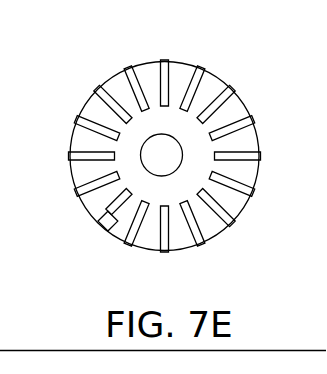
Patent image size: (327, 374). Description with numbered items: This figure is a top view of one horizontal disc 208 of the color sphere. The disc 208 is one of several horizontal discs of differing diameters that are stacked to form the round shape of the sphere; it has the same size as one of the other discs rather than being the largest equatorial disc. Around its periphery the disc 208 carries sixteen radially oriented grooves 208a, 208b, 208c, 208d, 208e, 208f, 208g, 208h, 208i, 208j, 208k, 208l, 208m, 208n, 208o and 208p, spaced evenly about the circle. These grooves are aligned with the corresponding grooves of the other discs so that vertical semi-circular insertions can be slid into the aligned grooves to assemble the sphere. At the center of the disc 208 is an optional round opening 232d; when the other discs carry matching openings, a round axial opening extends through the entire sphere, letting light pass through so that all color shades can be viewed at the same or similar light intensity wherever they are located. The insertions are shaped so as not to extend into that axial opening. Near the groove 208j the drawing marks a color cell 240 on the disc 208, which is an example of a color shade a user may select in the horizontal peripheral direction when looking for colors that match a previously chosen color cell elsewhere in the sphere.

The horizontal disc 208 is at (182, 40).
The groove 208a is at (200, 64).
The groove 208b is at (234, 88).
The groove 208c is at (253, 117).
The groove 208d is at (259, 156).
The groove 208e is at (253, 190).
The groove 208f is at (233, 224).
The groove 208g is at (202, 246).
The groove 208h is at (164, 253).
The groove 208i is at (125, 246).
The groove 208j is at (98, 222).
The groove 208k is at (76, 193).
The groove 208l is at (68, 156).
The groove 208m is at (76, 118).
The groove 208n is at (96, 88).
The groove 208o is at (127, 65).
The groove 208p is at (161, 58).
The round opening 232d is at (157, 178).
The color cell 240 is at (101, 230).